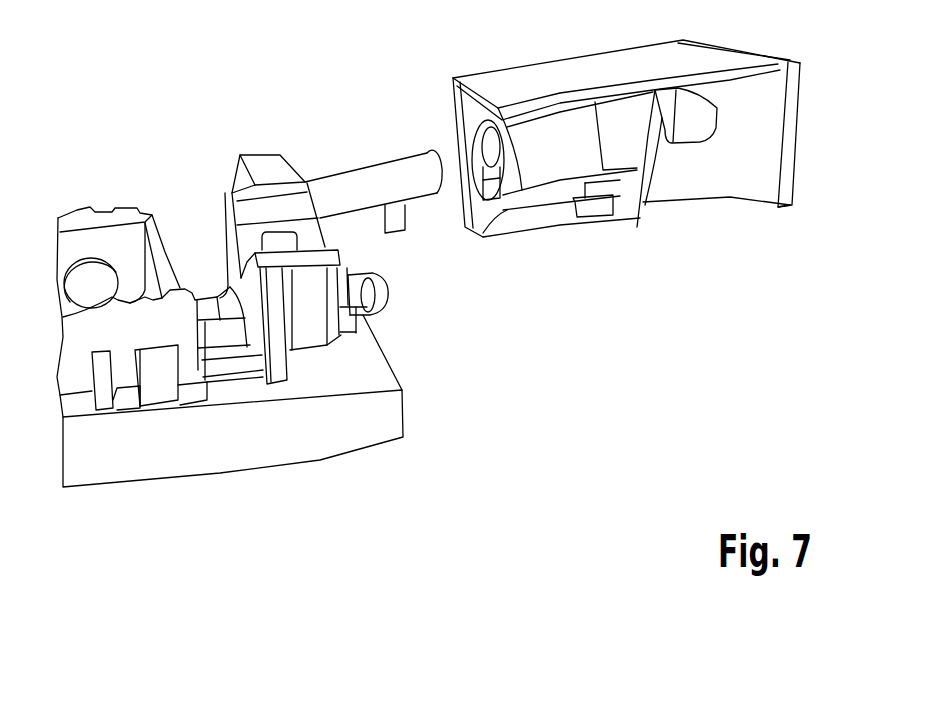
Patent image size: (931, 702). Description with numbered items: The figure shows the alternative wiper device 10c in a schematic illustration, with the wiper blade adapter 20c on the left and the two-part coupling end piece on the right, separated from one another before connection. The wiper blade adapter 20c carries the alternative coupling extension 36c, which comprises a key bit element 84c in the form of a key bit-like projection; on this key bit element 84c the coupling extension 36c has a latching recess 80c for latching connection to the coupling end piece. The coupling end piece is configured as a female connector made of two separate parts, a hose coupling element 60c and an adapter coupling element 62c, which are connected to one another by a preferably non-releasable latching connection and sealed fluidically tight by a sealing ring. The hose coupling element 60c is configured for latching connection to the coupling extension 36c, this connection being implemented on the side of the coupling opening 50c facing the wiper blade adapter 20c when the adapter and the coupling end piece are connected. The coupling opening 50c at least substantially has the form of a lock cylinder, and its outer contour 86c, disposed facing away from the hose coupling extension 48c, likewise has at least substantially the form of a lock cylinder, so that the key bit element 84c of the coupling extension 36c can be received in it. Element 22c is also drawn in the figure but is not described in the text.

The alternative wiper device 10c is at (676, 264).
The wiper blade adapter 20c is at (138, 128).
The base body 22c is at (266, 450).
The coupling extension 36c is at (343, 187).
The hose coupling extension 48c is at (648, 203).
The coupling opening 50c is at (496, 258).
The hose coupling element 60c is at (579, 179).
The adapter coupling element 62c is at (555, 78).
The latching recess 80c is at (393, 231).
The key bit element 84c is at (358, 235).
The outer contour 86c is at (452, 133).